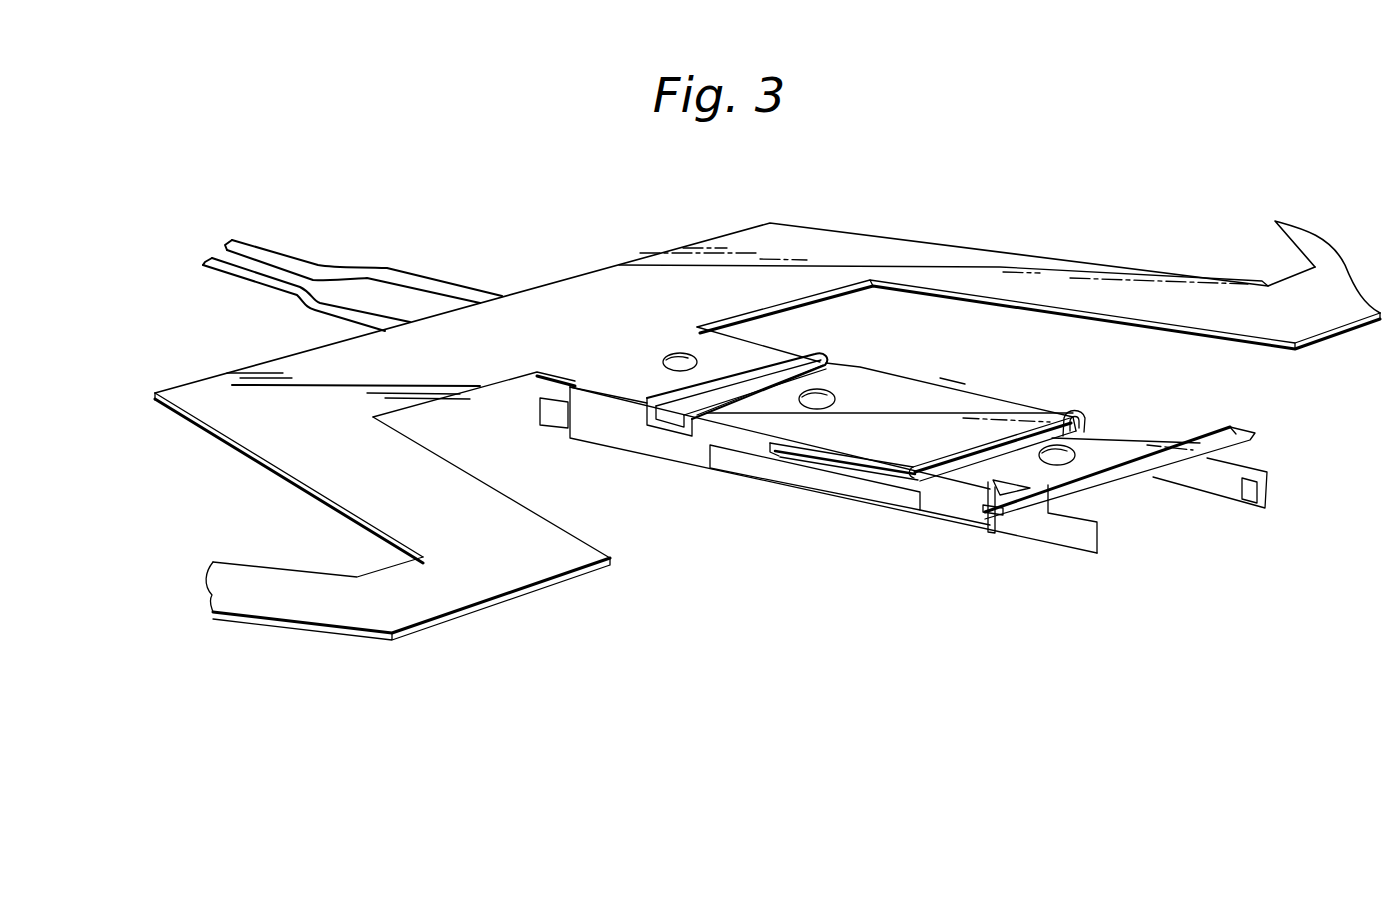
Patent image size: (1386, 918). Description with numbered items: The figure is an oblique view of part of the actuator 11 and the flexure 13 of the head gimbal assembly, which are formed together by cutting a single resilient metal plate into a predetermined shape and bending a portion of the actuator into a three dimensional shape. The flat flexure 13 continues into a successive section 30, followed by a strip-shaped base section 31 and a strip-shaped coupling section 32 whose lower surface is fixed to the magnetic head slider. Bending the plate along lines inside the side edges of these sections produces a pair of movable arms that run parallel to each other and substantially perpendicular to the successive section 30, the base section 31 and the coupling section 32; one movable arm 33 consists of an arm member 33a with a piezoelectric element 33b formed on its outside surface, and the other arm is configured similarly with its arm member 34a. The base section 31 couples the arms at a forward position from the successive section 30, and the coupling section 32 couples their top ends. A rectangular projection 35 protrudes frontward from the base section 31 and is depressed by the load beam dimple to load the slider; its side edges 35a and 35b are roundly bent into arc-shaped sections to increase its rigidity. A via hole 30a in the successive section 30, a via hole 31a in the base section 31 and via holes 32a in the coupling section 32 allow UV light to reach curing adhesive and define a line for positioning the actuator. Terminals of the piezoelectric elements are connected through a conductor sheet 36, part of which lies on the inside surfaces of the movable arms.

The actuator 11 is at (869, 552).
The flexure 13 is at (935, 253).
The successive section 30 is at (760, 347).
The via hole 30a is at (668, 355).
The base section 31 is at (867, 375).
The via hole 31a is at (805, 408).
The coupling section 32 is at (1123, 435).
The via holes 32a is at (1060, 458).
The movable arm 33 is at (937, 507).
The arm member 33a is at (923, 515).
The piezoelectric element 33b is at (827, 487).
The arm member 34a is at (1065, 418).
The rectangular projection 35 is at (985, 403).
The side edge 35a is at (813, 448).
The side edge 35b is at (952, 383).
The conductor sheet 36 is at (378, 324).